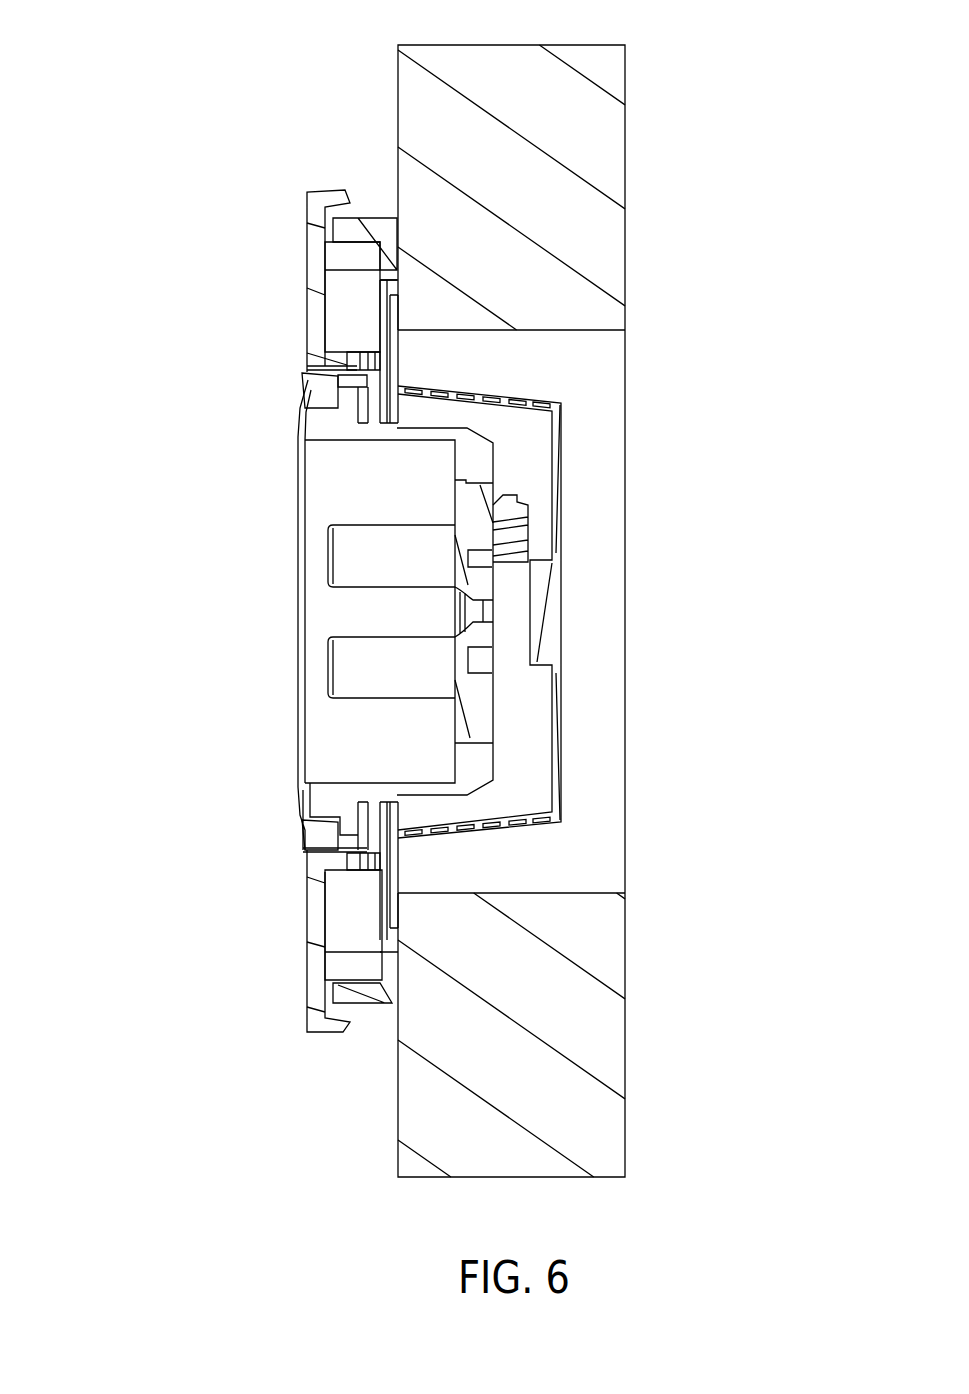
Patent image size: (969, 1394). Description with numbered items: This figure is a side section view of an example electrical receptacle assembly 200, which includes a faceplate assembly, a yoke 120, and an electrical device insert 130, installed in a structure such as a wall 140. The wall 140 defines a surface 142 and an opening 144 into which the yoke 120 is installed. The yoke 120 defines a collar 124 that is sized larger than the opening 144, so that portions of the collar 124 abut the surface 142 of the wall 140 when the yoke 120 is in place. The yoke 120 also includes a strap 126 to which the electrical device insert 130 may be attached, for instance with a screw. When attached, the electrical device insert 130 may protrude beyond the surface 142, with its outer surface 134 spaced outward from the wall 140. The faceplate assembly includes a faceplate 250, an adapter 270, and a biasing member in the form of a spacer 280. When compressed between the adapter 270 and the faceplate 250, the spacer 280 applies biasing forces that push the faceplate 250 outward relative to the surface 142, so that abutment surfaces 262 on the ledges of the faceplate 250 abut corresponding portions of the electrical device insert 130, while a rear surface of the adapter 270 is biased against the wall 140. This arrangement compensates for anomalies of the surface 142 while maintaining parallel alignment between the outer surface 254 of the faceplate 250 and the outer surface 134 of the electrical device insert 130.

The electrical receptacle assembly 200 is at (140, 249).
The yoke 120 is at (560, 487).
The collar 124 is at (395, 342).
The strap 126 is at (553, 623).
The electrical device insert 130 is at (298, 610).
The outer surface 134 is at (303, 843).
The wall 140 is at (593, 252).
The surface 142 is at (398, 1101).
The opening 144 is at (593, 748).
The faceplate 250 is at (307, 233).
The outer surface 254 is at (307, 920).
The abutment surface 262 is at (300, 385).
The adapter 270 is at (377, 218).
The spacer 280 is at (355, 255).